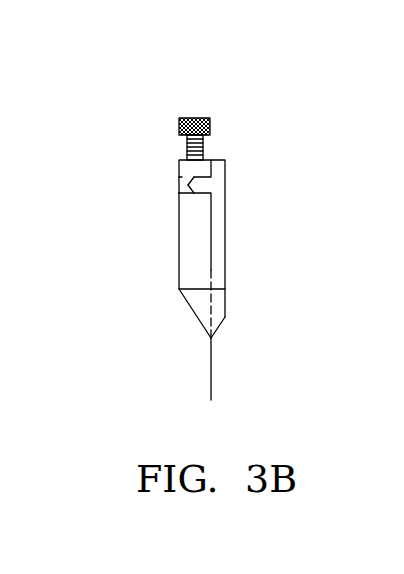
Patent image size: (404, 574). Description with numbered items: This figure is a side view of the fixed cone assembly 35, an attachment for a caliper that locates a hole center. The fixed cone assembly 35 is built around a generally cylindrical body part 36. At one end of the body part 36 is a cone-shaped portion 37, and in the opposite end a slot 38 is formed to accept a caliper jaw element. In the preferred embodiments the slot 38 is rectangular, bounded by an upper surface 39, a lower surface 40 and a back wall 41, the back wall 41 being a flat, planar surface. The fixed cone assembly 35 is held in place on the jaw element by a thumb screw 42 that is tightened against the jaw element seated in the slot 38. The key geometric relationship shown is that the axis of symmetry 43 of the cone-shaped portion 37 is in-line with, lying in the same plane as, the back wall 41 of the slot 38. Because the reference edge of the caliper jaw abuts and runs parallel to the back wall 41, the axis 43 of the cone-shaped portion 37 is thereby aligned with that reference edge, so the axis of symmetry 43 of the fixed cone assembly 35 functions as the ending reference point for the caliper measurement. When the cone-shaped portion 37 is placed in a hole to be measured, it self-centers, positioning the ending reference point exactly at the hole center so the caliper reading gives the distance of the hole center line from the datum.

The fixed cone assembly 35 is at (238, 166).
The body part 36 is at (193, 243).
The cone-shaped portion 37 is at (188, 305).
The slot 38 is at (176, 188).
The upper surface 39 is at (186, 184).
The lower surface 40 is at (186, 189).
The back wall 41 is at (210, 184).
The thumb screw 42 is at (195, 118).
The axis of symmetry 43 is at (212, 268).